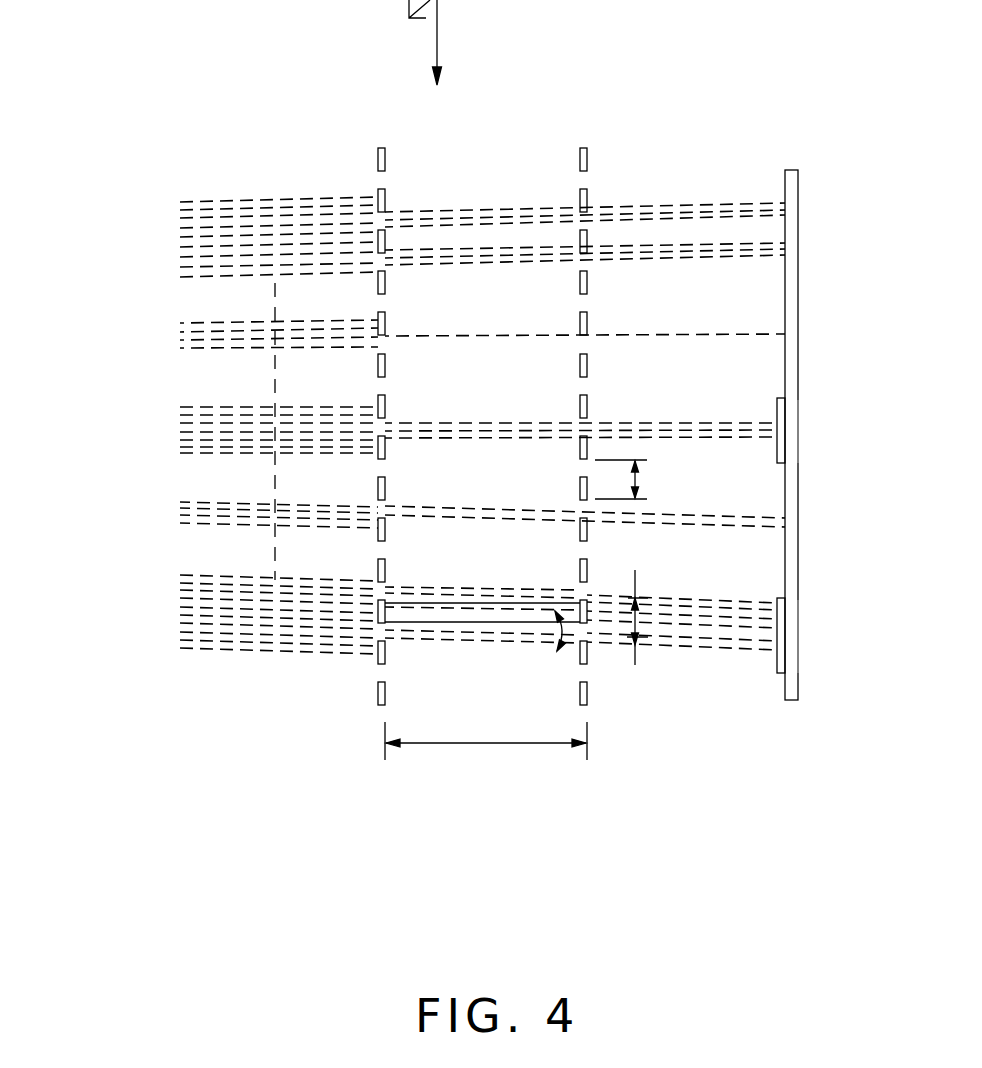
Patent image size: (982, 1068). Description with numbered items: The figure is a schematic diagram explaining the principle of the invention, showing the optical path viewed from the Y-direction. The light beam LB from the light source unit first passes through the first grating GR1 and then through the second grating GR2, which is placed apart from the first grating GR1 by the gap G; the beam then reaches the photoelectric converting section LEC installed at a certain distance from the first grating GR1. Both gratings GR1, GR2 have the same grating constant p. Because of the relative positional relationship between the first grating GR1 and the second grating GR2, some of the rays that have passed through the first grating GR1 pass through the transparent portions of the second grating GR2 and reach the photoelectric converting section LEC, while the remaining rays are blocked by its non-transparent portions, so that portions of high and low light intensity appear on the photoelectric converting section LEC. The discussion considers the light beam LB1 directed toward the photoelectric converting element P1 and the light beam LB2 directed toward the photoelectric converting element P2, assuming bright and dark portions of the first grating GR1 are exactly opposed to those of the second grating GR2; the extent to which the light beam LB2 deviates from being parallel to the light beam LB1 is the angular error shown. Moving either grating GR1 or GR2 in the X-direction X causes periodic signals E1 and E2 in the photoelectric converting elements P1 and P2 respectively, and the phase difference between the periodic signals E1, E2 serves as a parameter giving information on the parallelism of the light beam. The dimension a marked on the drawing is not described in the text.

The photoelectric converting section LEC is at (790, 168).
The photoelectric converting element P1 is at (777, 399).
The photoelectric converting element P2 is at (777, 600).
The periodic signal E1 is at (800, 437).
The periodic signal E2 is at (800, 646).
The first grating GR1 is at (366, 682).
The second grating GR2 is at (603, 683).
The light beam LB is at (162, 392).
The light beam LB1 is at (527, 414).
The light beam LB2 is at (527, 582).
The X-direction X is at (425, 50).
The gap G is at (486, 734).
The grating constant p is at (621, 479).
The beam offset a is at (631, 616).